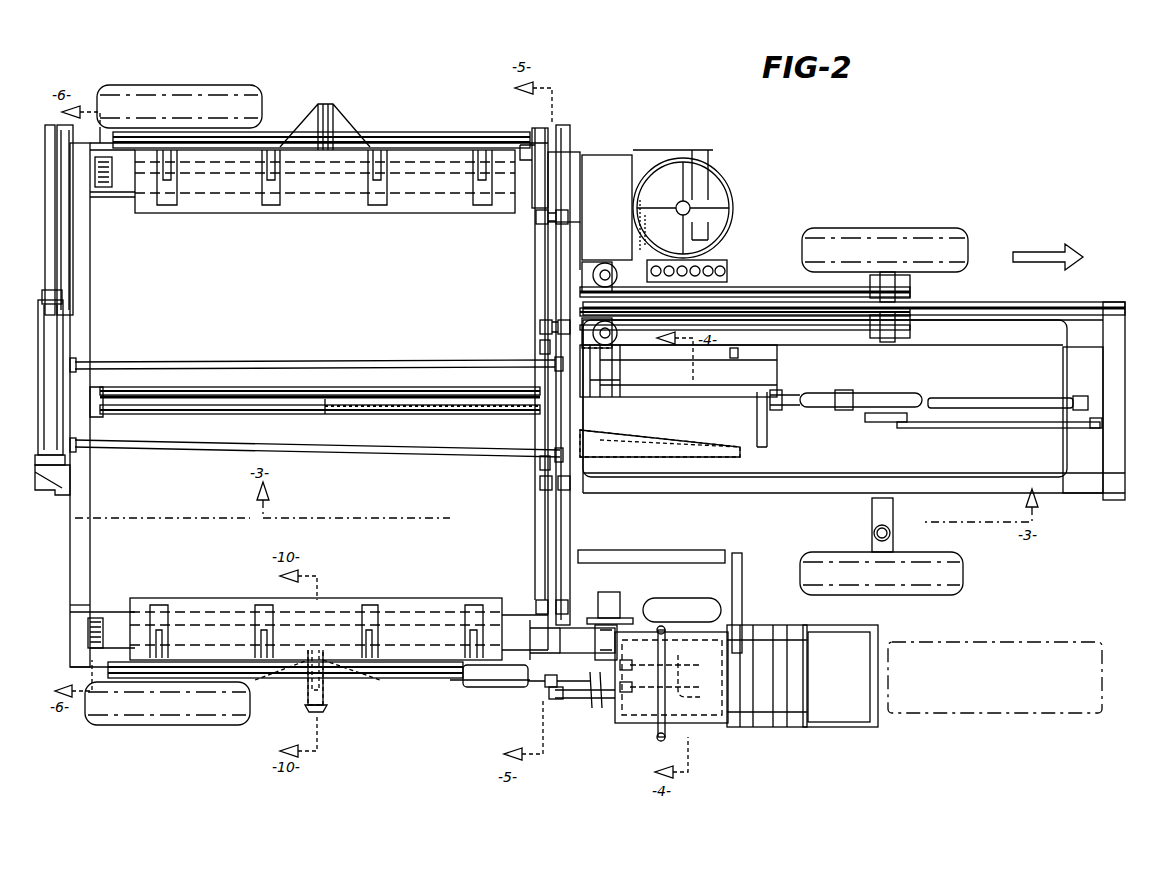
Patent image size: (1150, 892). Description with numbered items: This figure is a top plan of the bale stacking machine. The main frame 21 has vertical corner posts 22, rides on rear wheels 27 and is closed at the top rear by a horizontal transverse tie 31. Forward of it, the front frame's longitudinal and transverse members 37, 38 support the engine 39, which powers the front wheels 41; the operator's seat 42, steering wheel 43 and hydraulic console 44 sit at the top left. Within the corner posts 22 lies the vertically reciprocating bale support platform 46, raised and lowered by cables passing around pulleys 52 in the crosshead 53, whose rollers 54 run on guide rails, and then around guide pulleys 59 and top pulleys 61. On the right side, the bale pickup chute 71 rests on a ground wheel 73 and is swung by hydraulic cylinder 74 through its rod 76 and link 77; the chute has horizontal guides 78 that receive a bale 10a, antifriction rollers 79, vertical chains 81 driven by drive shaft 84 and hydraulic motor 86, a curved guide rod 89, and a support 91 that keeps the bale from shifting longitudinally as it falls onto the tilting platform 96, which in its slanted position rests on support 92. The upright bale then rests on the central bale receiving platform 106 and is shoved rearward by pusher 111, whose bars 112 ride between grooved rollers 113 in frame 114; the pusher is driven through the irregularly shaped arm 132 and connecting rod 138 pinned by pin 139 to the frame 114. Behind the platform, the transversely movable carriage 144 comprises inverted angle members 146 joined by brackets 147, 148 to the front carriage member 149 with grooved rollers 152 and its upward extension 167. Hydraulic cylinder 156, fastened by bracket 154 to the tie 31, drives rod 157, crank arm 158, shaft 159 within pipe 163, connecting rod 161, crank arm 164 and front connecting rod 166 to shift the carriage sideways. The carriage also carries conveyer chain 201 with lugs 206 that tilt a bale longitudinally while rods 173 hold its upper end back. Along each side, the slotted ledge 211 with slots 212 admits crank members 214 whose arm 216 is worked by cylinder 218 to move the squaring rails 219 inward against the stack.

The bale 10a is at (1045, 648).
The main frame 21 is at (397, 118).
The vertical corner posts 22 is at (565, 155).
The rear wheels 27 is at (210, 68).
The horizontal transverse tie 31 is at (72, 608).
The longitudinal members 37 is at (1022, 345).
The transverse members 38 is at (1103, 375).
The engine 39 is at (955, 472).
The front wheels 41 is at (897, 230).
The operator's seat 42 is at (612, 202).
The steering wheel 43 is at (680, 202).
The console 44 is at (720, 265).
The bale support platform 46 is at (418, 310).
The pulleys 52 is at (910, 290).
The crosshead 53 is at (890, 275).
The rollers 54 is at (925, 302).
The pulleys 59 is at (618, 262).
The top pulleys 61 is at (538, 218).
The bale pickup chute 71 is at (705, 705).
The ground wheel 73 is at (703, 600).
The hydraulic cylinder 74 is at (490, 690).
The rod 76 is at (541, 688).
The link 77 is at (573, 690).
The horizontal guides 78 is at (857, 628).
The antifriction rollers 79 is at (785, 688).
The vertical chains 81 is at (704, 664).
The drive shaft 84 is at (615, 640).
The hydraulic motor 86 is at (618, 600).
The guide rod 89 is at (655, 703).
The support 91 is at (742, 605).
The support 92 is at (686, 540).
The tilting platform 96 is at (692, 452).
The bale receiving platform 106 is at (725, 386).
The pusher 111 is at (760, 440).
The bars 112 is at (908, 398).
The grooved rollers 113 is at (776, 410).
The frame 114 is at (813, 393).
The irregularly shaped arm 132 is at (878, 422).
The connecting rod 138 is at (990, 428).
The pin 139 is at (1093, 430).
The carriage 144 is at (210, 375).
The inverted angle members 146 is at (262, 388).
The brackets 147 is at (538, 395).
The brackets 148 is at (100, 388).
The front carriage member 149 is at (540, 347).
The grooved rollers 152 is at (540, 318).
The bracket 154 is at (48, 480).
The hydraulic cylinder 156 is at (42, 412).
The rod 157 is at (48, 278).
The crank arm 158 is at (50, 158).
The shaft 159 is at (82, 172).
The connecting rod 161 is at (60, 222).
The pipe 163 is at (240, 165).
The crank arm 164 is at (532, 140).
The front connecting rod 166 is at (536, 244).
The upward extension 167 is at (540, 300).
The rods 173 is at (340, 365).
The conveyer chain 201 is at (446, 413).
The lugs 206 is at (327, 414).
The ledge 211 is at (302, 215).
The slots 212 is at (478, 208).
The crank members 214 is at (460, 685).
The arm 216 is at (330, 680).
The cylinder 218 is at (316, 712).
The squaring rails 219 is at (425, 140).